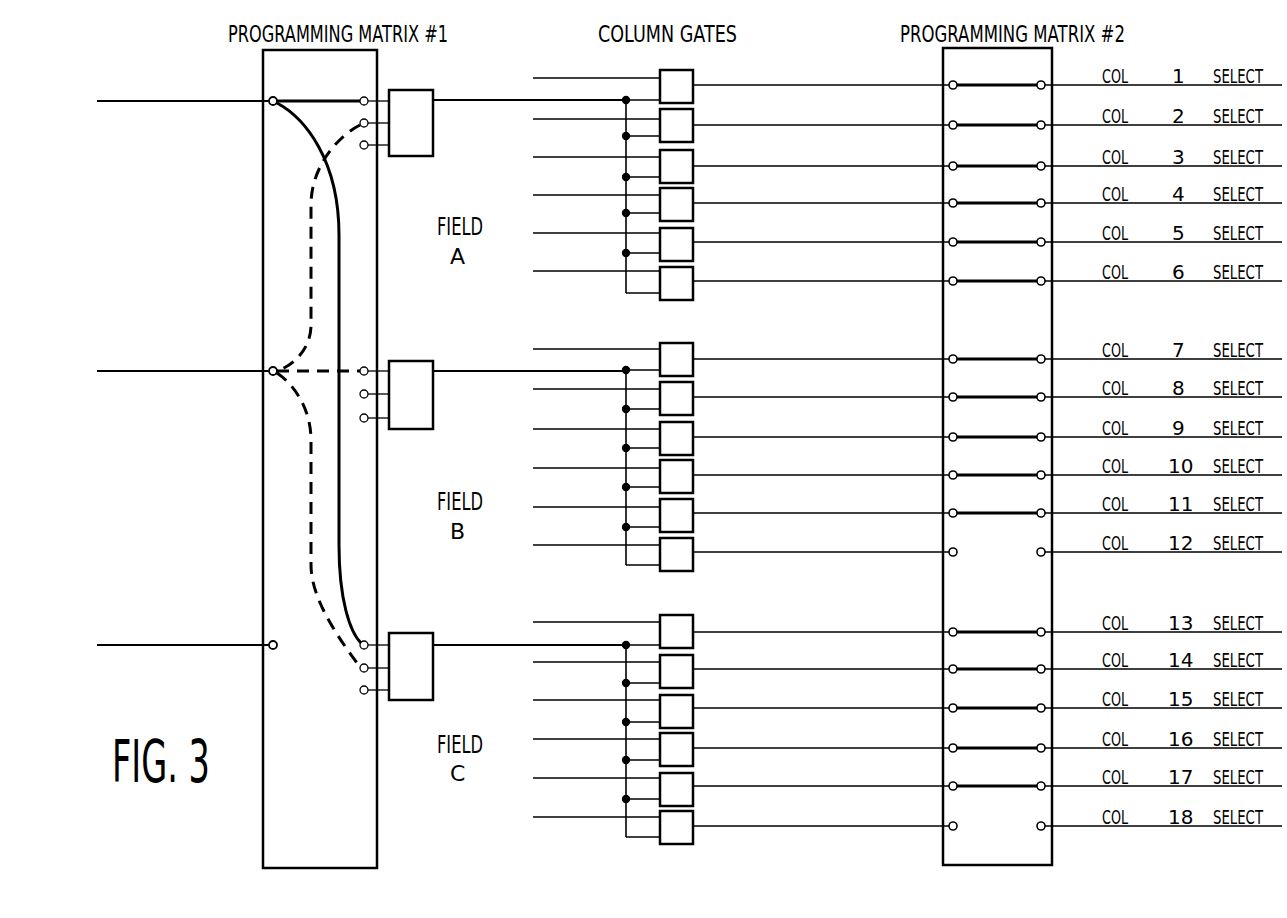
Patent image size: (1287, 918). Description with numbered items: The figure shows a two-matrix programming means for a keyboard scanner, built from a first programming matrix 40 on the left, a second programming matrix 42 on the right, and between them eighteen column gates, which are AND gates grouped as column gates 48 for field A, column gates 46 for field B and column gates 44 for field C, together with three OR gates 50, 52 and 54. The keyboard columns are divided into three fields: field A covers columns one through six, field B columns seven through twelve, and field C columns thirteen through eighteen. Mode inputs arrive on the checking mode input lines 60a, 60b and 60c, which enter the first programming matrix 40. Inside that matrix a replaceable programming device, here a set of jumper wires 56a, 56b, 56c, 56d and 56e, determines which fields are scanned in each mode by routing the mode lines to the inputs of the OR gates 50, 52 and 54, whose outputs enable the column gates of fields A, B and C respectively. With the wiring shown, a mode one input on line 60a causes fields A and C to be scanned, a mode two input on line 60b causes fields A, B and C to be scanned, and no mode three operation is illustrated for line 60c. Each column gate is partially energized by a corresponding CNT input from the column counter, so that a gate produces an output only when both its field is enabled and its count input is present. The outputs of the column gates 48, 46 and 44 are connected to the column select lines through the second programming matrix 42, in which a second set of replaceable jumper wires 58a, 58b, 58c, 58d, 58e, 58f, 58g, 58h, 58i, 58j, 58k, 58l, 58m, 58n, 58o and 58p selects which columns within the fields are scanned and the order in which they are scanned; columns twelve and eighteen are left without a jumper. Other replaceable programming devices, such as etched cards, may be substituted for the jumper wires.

The first programming matrix 40 is at (377, 823).
The second programming matrix 42 is at (1052, 843).
The column gates 44 is at (693, 642).
The column gates 46 is at (693, 368).
The column gates 48 is at (693, 97).
The OR gate 50 is at (433, 128).
The OR gate 52 is at (433, 400).
The OR gate 54 is at (433, 680).
The jumper wire 56a is at (310, 277).
The jumper wire 56b is at (339, 232).
The jumper wire 56c is at (325, 370).
The jumper wire 56d is at (339, 530).
The jumper wire 56e is at (309, 515).
The jumper wire 58a is at (983, 84).
The jumper wire 58b is at (983, 124).
The jumper wire 58c is at (983, 165).
The jumper wire 58d is at (983, 202).
The jumper wire 58e is at (983, 241).
The jumper wire 58f is at (983, 280).
The jumper wire 58g is at (983, 358).
The jumper wire 58h is at (983, 396).
The jumper wire 58i is at (983, 436).
The jumper wire 58j is at (983, 474).
The jumper wire 58k is at (983, 512).
The jumper wire 58l is at (983, 631).
The jumper wire 58m is at (983, 668).
The jumper wire 58n is at (983, 707).
The jumper wire 58o is at (983, 747).
The jumper wire 58p is at (983, 785).
The checking mode input line 60a is at (181, 103).
The checking mode input line 60b is at (195, 373).
The checking mode input line 60c is at (166, 647).